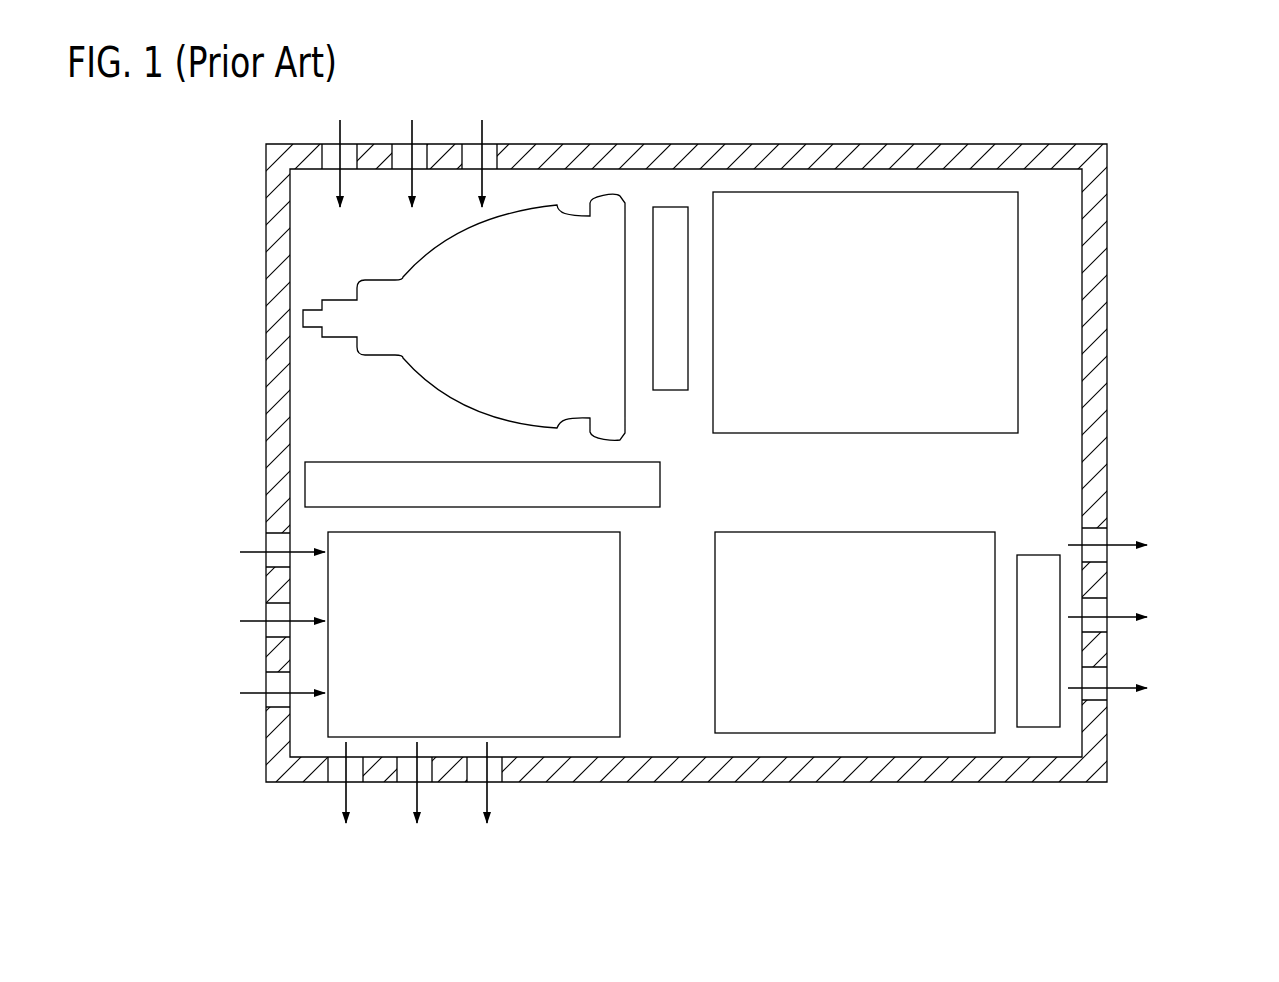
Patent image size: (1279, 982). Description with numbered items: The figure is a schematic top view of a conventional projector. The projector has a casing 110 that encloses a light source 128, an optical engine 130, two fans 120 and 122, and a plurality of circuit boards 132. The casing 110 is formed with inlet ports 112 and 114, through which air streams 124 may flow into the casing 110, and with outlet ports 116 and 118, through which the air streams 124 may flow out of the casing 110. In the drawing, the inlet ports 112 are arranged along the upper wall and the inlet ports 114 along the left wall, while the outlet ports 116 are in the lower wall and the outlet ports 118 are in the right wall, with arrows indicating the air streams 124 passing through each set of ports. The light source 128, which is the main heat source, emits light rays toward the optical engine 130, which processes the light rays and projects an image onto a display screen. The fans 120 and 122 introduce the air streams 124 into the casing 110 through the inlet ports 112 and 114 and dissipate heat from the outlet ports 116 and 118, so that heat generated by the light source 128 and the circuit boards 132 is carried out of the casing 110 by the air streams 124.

The casing 110 is at (1104, 223).
The inlet port 112 is at (348, 147).
The inlet port 114 is at (277, 613).
The outlet port 116 is at (407, 777).
The outlet port 118 is at (1100, 538).
The fan 120 is at (313, 477).
The fan 122 is at (1057, 590).
The air streams 124 is at (482, 135).
The light source 128 is at (598, 253).
The optical engine 130 is at (673, 253).
The circuit boards 132 is at (818, 210).